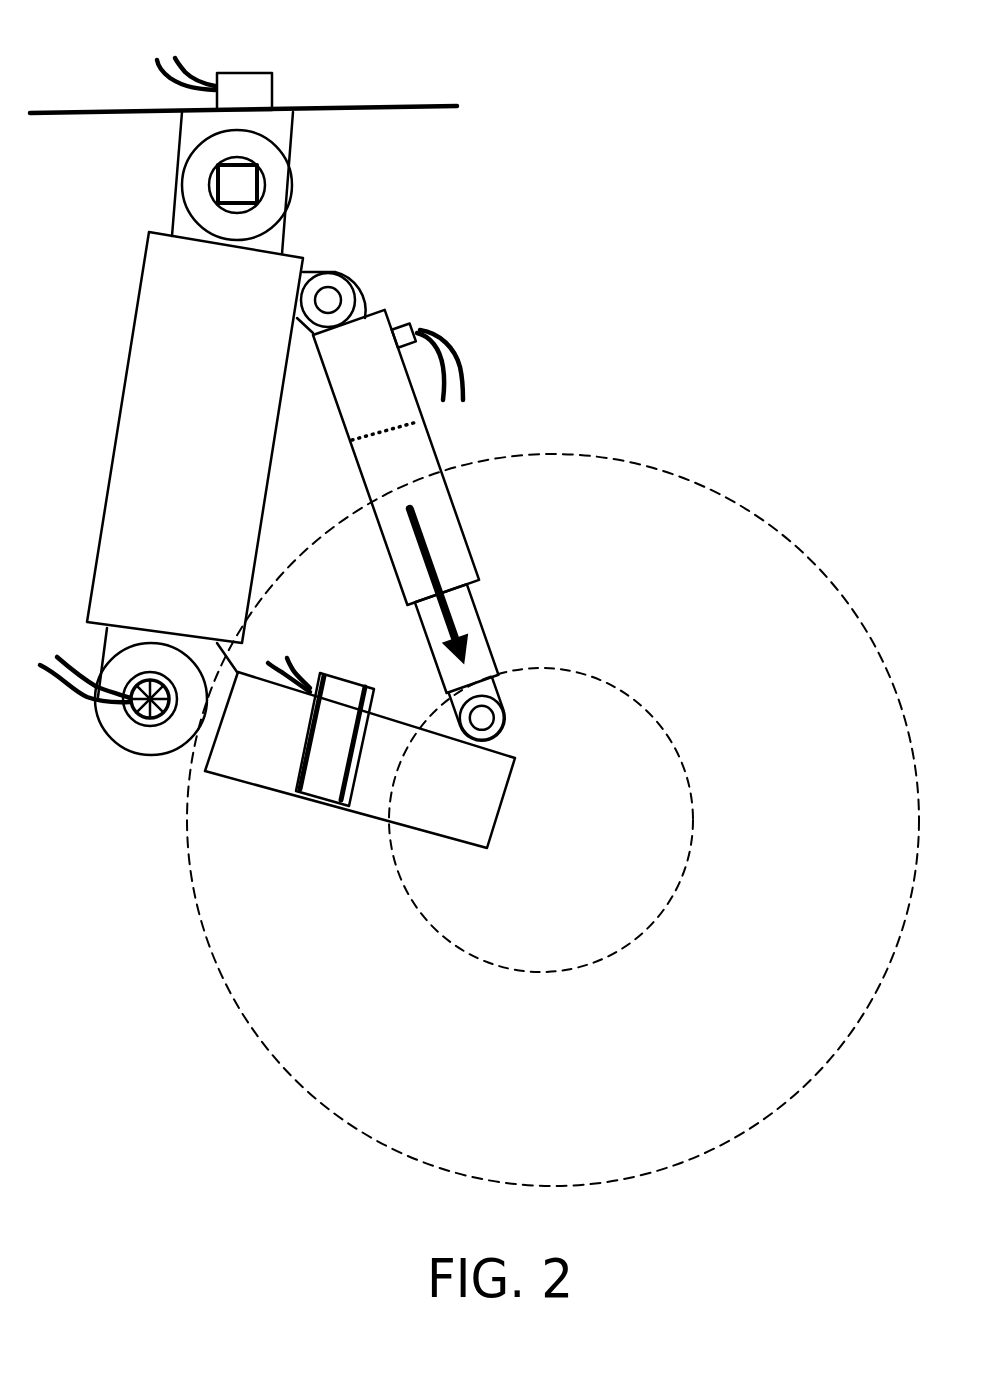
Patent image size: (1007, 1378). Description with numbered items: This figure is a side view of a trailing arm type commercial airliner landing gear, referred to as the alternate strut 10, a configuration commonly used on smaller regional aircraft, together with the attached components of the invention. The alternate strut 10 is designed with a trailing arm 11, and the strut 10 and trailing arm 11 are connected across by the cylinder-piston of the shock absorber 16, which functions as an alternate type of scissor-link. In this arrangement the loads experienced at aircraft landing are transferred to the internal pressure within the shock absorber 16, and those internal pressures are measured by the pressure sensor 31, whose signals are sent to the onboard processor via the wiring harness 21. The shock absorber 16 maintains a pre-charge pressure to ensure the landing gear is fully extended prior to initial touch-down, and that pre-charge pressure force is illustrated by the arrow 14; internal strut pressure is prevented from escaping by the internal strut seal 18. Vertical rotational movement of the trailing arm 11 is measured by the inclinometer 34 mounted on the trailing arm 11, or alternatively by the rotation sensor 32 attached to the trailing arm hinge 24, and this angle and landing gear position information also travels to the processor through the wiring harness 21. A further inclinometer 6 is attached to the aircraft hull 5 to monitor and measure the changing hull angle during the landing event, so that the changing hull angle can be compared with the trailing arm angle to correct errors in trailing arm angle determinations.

The aircraft hull 5 is at (328, 114).
The inclinometer 6 is at (255, 92).
The alternate strut 10 is at (177, 357).
The trailing arm 11 is at (468, 805).
The arrow 14 is at (465, 658).
The shock absorber 16 is at (447, 530).
The internal strut seal 18 is at (407, 423).
The wiring harness 21 is at (163, 78).
The trailing arm hinge 24 is at (143, 737).
The pressure sensor 31 is at (407, 337).
The rotation sensor 32 is at (137, 677).
The inclinometer 34 is at (348, 687).